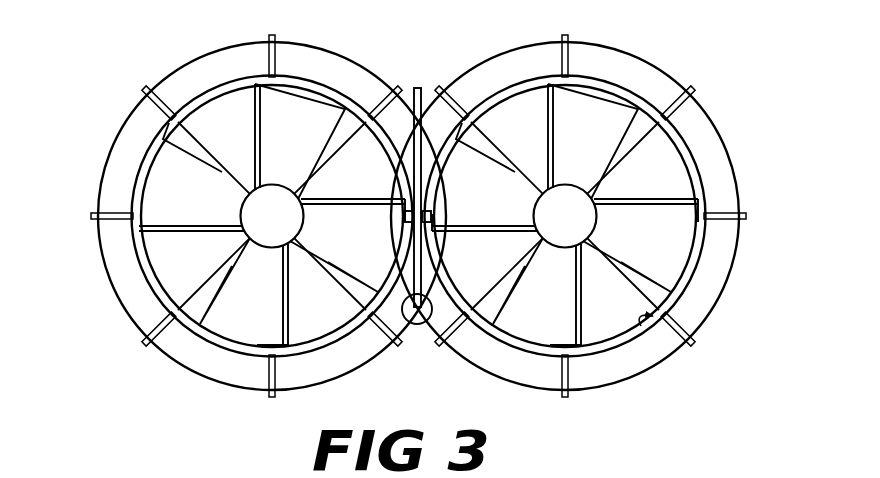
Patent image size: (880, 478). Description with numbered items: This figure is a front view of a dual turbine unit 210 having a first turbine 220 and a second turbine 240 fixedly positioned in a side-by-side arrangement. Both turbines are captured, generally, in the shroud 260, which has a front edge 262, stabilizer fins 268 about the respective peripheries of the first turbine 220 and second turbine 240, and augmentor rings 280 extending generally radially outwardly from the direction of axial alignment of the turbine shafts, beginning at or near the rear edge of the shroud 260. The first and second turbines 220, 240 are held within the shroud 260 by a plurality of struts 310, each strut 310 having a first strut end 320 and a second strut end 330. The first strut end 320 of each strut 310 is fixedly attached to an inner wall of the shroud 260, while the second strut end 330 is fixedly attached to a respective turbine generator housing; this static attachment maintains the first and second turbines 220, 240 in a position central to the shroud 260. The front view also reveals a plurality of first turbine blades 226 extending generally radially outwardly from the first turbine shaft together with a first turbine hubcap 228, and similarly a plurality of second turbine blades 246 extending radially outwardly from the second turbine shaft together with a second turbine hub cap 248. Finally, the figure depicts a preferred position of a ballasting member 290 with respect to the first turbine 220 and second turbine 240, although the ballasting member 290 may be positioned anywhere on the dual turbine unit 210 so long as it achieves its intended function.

The dual turbine unit 210 is at (145, 43).
The first turbine 220 is at (227, 410).
The first turbine blades 226 is at (303, 133).
The first turbine hubcap 228 is at (292, 228).
The second turbine 240 is at (601, 424).
The second turbine blades 246 is at (596, 136).
The second turbine hub cap 248 is at (585, 226).
The shroud 260 is at (187, 97).
The front edge 262 is at (223, 353).
The stabilizer fins 268 is at (677, 97).
The augmentor rings 280 is at (472, 82).
The ballasting member 290 is at (414, 325).
The struts 310 is at (638, 145).
The first strut end 320 is at (680, 352).
The second strut end 330 is at (588, 252).